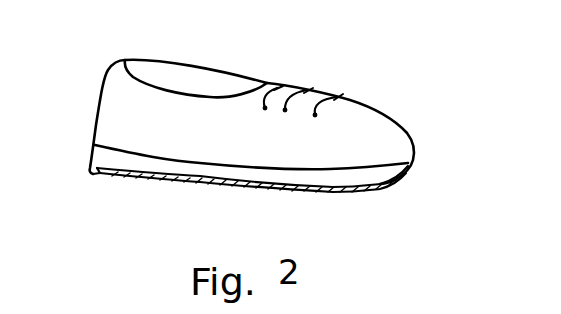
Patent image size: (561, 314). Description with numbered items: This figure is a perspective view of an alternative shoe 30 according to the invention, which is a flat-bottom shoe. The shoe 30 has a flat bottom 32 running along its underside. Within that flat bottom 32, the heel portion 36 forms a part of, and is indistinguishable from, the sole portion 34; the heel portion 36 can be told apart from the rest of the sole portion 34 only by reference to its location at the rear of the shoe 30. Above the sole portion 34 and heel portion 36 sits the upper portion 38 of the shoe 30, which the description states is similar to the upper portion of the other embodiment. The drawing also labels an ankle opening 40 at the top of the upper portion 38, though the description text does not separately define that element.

The shoe 30 is at (488, 72).
The flat bottom 32 is at (358, 195).
The sole portion 34 is at (293, 190).
The heel portion 36 is at (100, 177).
The upper portion 38 is at (98, 107).
The ankle opening 40 is at (177, 80).